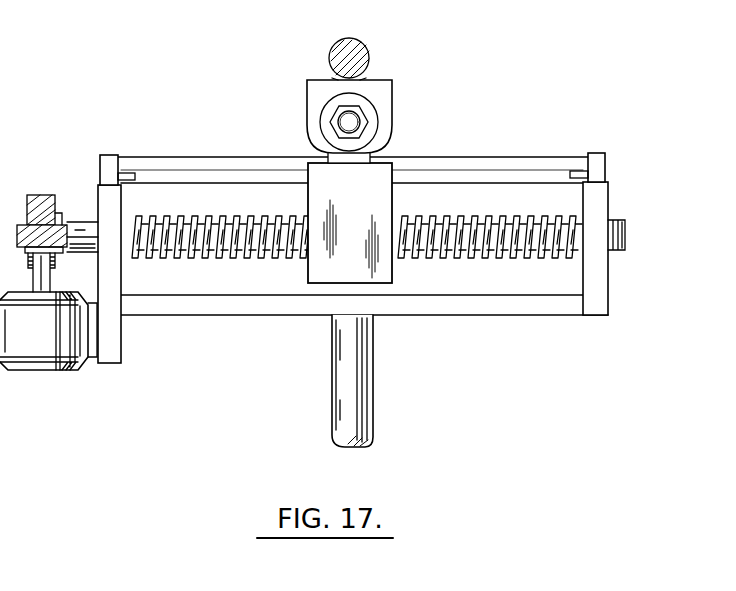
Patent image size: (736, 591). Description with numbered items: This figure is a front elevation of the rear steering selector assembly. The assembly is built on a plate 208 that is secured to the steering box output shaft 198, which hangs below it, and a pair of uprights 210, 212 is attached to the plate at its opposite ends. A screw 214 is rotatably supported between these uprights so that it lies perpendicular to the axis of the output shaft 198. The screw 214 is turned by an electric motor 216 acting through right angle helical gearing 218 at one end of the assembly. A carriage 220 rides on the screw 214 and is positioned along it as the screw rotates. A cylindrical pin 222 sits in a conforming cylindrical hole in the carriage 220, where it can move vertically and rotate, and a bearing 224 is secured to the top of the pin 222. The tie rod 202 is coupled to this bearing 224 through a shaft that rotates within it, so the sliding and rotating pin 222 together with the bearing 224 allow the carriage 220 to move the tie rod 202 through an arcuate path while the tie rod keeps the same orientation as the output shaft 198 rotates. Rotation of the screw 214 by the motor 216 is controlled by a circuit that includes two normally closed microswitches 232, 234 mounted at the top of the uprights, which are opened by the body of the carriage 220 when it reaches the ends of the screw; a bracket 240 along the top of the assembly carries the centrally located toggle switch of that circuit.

The steering box output shaft 198 is at (362, 395).
The tie rod 202 is at (361, 50).
The plate 208 is at (236, 303).
The upright 210 is at (110, 277).
The upright 212 is at (593, 268).
The screw 214 is at (227, 216).
The electric motor 216 is at (30, 342).
The right angle helical gearing 218 is at (41, 190).
The carriage 220 is at (380, 198).
The cylindrical pin 222 is at (373, 152).
The bearing 224 is at (370, 112).
The microswitch 232 is at (110, 165).
The microswitch 234 is at (595, 165).
The bracket 240 is at (265, 167).